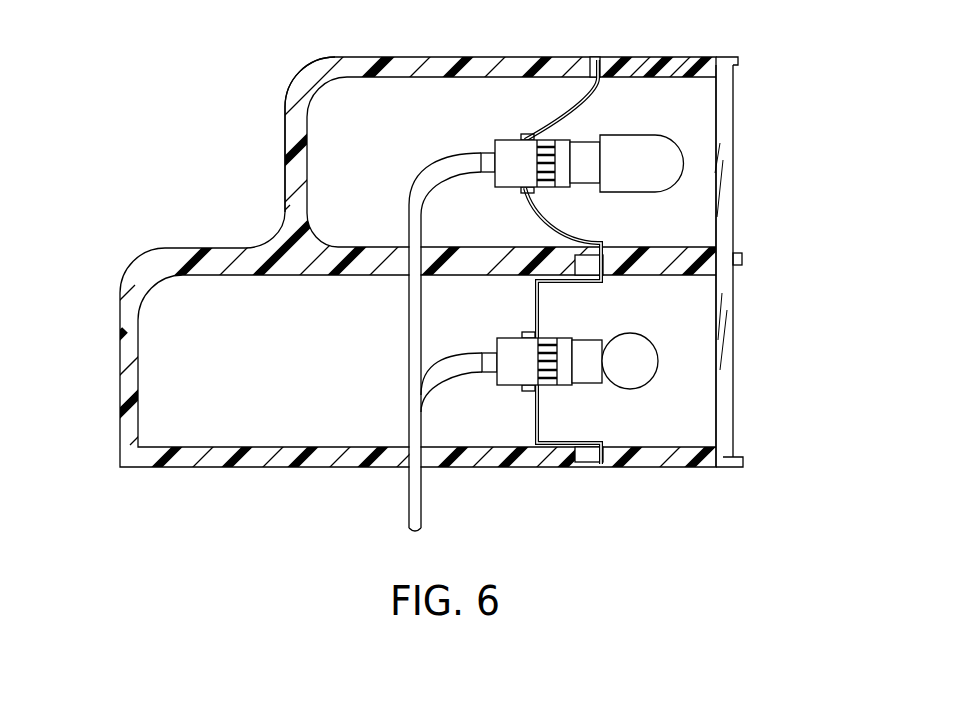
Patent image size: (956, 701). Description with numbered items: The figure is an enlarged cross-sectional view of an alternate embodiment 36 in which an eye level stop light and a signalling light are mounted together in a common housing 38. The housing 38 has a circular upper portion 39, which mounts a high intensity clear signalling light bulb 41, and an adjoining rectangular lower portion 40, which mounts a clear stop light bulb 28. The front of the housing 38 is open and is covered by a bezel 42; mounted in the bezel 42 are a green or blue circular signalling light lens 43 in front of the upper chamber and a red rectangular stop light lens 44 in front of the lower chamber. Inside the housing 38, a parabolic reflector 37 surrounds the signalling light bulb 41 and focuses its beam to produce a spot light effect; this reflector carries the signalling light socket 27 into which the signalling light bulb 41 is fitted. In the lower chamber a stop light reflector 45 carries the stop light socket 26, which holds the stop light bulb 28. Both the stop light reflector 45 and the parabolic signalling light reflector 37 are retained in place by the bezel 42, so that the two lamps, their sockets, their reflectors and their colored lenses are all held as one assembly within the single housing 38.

The alternate embodiment 36 is at (398, 57).
The housing 38 is at (297, 115).
The bezel 42 is at (653, 57).
The circular upper portion 39 is at (733, 87).
The circular signalling light lens 43 is at (733, 143).
The rectangular stop light lens 44 is at (733, 331).
The rectangular lower portion 40 is at (732, 450).
The signalling light socket 27 is at (510, 140).
The signalling light bulb 41 is at (632, 137).
The parabolic reflector 37 is at (540, 198).
The stop light socket 26 is at (513, 338).
The stop light bulb 28 is at (640, 306).
The stop light reflector 45 is at (537, 403).